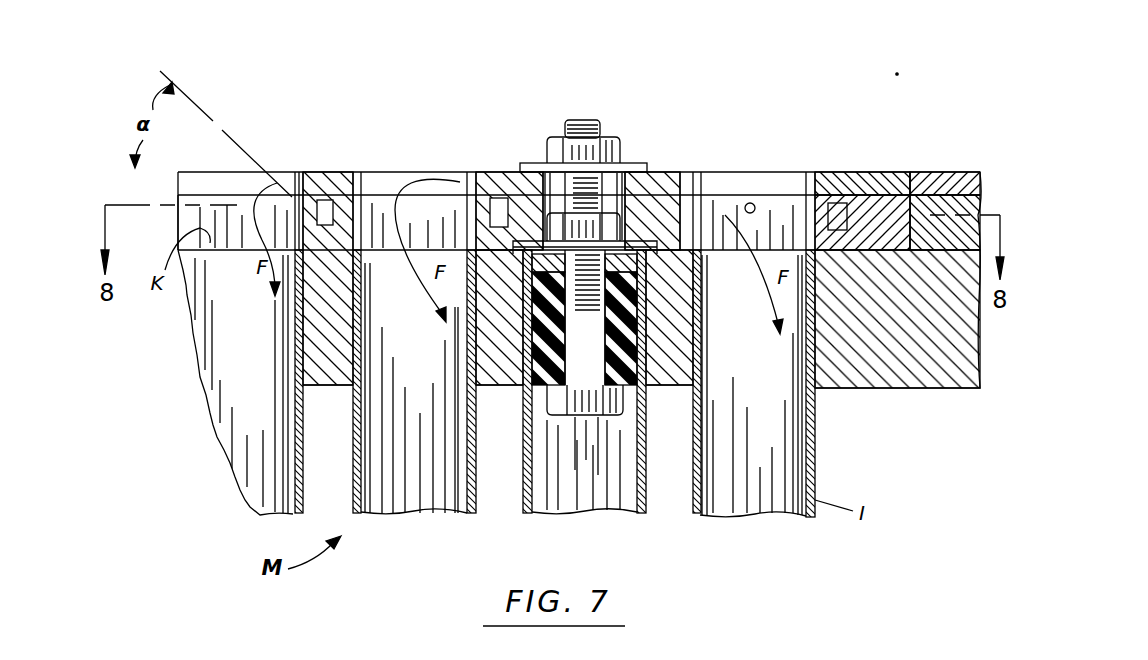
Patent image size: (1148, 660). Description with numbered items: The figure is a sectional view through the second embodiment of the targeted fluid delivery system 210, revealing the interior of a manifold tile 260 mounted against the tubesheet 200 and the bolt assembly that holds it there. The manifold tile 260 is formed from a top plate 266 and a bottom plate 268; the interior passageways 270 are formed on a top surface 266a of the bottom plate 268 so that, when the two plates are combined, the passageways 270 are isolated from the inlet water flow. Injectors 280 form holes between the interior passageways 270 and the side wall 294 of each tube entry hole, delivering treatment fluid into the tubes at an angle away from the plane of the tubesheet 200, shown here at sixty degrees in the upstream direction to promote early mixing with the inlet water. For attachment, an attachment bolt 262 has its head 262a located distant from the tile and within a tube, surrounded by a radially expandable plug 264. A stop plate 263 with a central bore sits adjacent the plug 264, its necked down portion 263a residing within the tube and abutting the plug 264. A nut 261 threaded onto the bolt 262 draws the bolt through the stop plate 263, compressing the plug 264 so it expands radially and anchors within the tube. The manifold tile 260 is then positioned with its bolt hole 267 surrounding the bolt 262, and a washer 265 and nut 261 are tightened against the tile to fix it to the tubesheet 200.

The tubesheet 200 is at (962, 390).
The targeted fluid delivery system 210 is at (357, 91).
The manifold tile 260 is at (293, 195).
The nut 261 is at (557, 135).
The attachment bolt 262 is at (582, 120).
The head 262a is at (556, 408).
The stop plate 263 is at (498, 240).
The necked down portion 263a is at (645, 245).
The radially expandable plug 264 is at (641, 485).
The washer 265 is at (527, 163).
The top plate 266 is at (178, 178).
The top surface 266a is at (872, 197).
The bolt hole 267 is at (645, 218).
The bottom plate 268 is at (180, 222).
The interior passageway 270 is at (342, 198).
The injector 280 is at (323, 200).
The side wall 294 is at (725, 212).